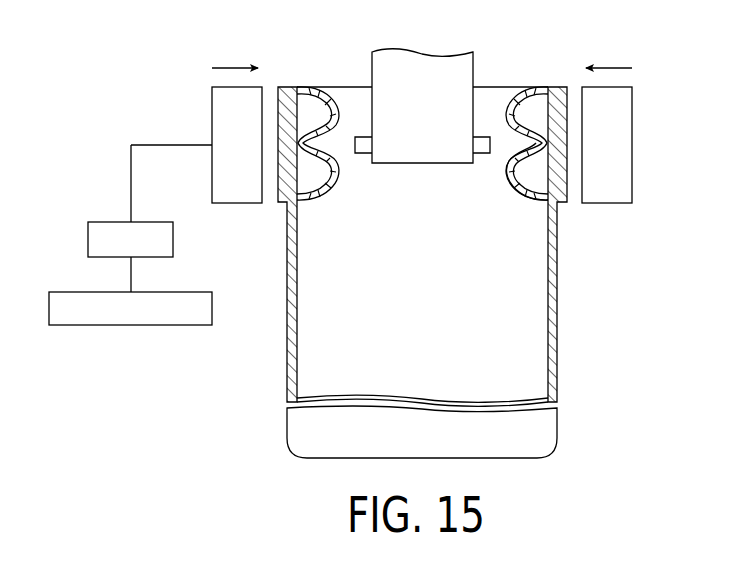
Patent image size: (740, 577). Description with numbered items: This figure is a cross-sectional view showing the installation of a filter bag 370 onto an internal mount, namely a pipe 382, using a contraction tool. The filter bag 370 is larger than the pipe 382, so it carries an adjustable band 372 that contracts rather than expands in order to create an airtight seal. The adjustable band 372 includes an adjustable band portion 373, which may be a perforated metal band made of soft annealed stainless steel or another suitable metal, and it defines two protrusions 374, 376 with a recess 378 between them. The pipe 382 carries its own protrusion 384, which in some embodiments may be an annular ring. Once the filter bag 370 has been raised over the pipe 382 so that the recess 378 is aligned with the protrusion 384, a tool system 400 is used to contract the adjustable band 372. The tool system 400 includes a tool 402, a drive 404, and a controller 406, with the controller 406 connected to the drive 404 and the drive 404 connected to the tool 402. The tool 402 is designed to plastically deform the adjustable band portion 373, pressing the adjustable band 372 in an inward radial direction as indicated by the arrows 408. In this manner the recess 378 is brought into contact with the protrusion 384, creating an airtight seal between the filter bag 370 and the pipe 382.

The filter bag 370 is at (542, 428).
The adjustable band 372 is at (331, 216).
The adjustable band portion 373 is at (563, 174).
The protrusion 374 is at (527, 90).
The protrusion 376 is at (518, 207).
The recess 378 is at (540, 130).
The pipe 382 is at (418, 67).
The protrusion 384 is at (357, 148).
The tool system 400 is at (213, 384).
The tool 402 is at (237, 205).
The drive 404 is at (110, 222).
The controller 406 is at (92, 292).
The arrows 408 is at (231, 68).